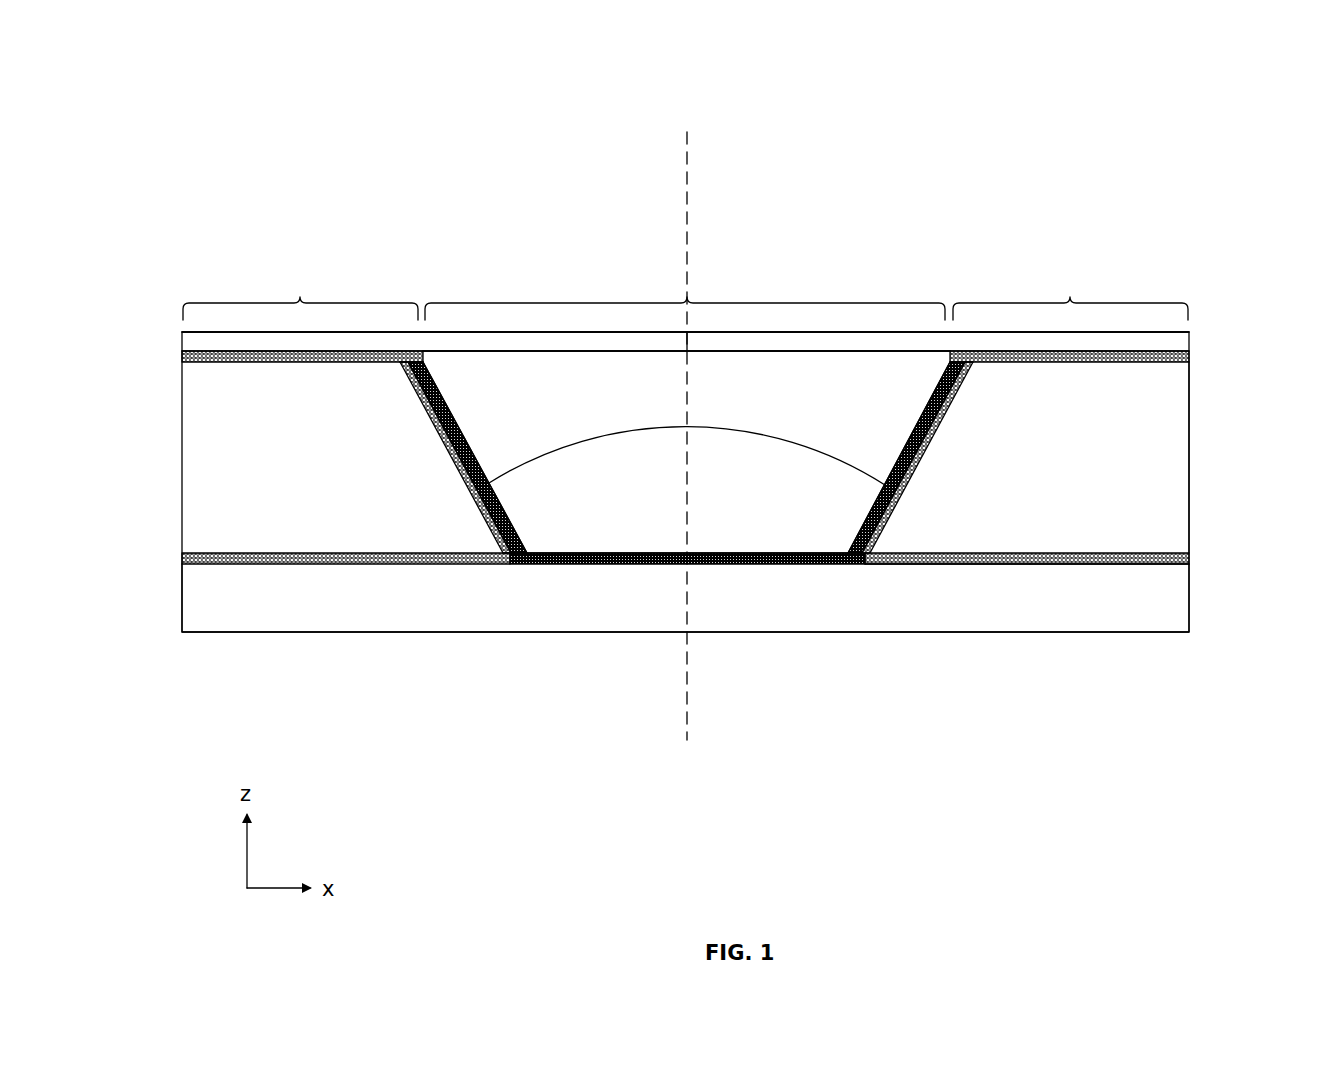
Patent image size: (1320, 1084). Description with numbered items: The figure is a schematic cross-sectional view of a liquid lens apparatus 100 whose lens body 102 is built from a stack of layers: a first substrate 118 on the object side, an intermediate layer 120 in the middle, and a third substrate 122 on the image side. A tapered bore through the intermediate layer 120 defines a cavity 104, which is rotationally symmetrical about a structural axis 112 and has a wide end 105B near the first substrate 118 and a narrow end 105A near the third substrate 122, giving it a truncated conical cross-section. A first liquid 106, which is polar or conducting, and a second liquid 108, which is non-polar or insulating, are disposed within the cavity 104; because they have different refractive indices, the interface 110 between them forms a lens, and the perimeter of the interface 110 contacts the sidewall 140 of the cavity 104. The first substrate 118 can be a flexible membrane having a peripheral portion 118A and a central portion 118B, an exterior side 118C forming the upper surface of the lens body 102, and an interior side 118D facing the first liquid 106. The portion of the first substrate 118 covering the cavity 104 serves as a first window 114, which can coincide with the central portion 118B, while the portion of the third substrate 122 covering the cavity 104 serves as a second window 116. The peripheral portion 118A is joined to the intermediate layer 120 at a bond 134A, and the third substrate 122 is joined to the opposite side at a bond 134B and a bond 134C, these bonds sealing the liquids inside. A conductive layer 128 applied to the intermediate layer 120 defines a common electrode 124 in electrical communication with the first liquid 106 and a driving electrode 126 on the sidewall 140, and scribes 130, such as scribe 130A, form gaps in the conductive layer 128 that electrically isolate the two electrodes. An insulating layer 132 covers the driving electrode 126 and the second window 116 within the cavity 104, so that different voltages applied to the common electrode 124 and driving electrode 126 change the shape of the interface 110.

The liquid lens apparatus 100 is at (1036, 100).
The lens body 102 is at (168, 332).
The cavity 104 is at (885, 385).
The narrow end 105A is at (510, 565).
The wide end 105B is at (423, 352).
The first liquid 106 is at (840, 385).
The second liquid 108 is at (663, 527).
The interface 110 is at (637, 435).
The structural axis 112 is at (688, 142).
The first window 114 is at (739, 340).
The second window 116 is at (727, 593).
The first substrate 118 is at (1163, 343).
The peripheral portion 118A is at (300, 302).
The central portion 118B is at (687, 295).
The exterior side 118C is at (625, 331).
The interior side 118D is at (639, 352).
The intermediate layer 120 is at (1155, 497).
The third substrate 122 is at (1155, 600).
The common electrode 124 is at (200, 350).
The driving electrode 126 is at (425, 406).
The conductive layer 128 is at (310, 563).
The scribes 130 is at (972, 363).
The scribe 130A is at (403, 363).
The insulating layer 132 is at (548, 565).
The bond 134A is at (1187, 357).
The bond 134B is at (958, 565).
The bond 134C is at (1108, 565).
The sidewall 140 is at (467, 430).